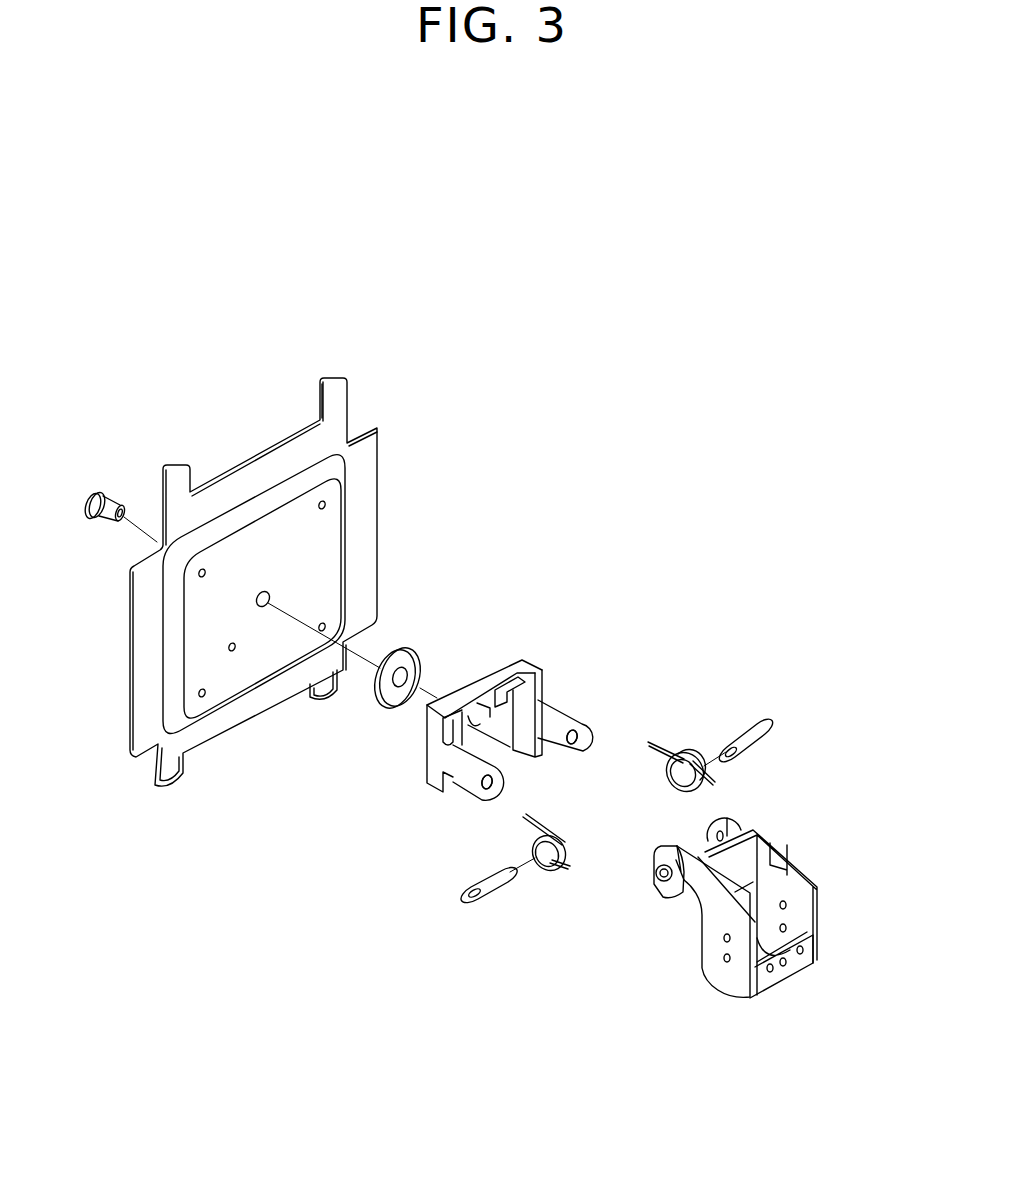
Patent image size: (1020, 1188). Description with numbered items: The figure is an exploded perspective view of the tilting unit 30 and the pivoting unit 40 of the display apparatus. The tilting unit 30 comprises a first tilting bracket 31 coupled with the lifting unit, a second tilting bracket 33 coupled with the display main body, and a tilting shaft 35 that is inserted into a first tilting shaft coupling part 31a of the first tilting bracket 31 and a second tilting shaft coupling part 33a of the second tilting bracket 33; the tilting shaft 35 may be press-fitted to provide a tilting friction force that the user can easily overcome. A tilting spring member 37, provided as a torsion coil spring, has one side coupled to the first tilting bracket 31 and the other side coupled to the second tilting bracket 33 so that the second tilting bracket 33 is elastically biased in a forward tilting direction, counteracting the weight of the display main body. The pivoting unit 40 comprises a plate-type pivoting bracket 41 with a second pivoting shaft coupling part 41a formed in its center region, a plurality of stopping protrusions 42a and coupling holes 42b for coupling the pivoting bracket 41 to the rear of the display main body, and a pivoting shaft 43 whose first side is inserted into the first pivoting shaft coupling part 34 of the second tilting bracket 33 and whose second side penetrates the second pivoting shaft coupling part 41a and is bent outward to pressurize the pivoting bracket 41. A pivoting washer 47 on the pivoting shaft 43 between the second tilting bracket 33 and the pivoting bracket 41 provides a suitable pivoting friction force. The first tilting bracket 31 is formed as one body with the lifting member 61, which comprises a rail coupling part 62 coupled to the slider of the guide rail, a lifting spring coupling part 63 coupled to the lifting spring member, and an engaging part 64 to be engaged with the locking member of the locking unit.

The tilting unit 30 is at (629, 662).
The first tilting bracket 31 is at (708, 827).
The first tilting shaft coupling part 31a is at (680, 897).
The second tilting bracket 33 is at (522, 654).
The second tilting shaft coupling part 33a is at (508, 786).
The first pivoting shaft coupling part 34 is at (473, 700).
The tilting shaft 35 is at (490, 892).
The tilting spring member 37 is at (553, 870).
The pivoting unit 40 is at (447, 523).
The pivoting bracket 41 is at (130, 673).
The second pivoting shaft coupling part 41a is at (264, 606).
The stopping protrusions 42a is at (320, 386).
The coupling holes 42b is at (198, 573).
The pivoting shaft 43 is at (92, 490).
The pivoting washer 47 is at (406, 652).
The lifting member 61 is at (725, 990).
The rail coupling part 62 is at (790, 928).
The lifting spring coupling part 63 is at (800, 956).
The engaging part 64 is at (770, 973).